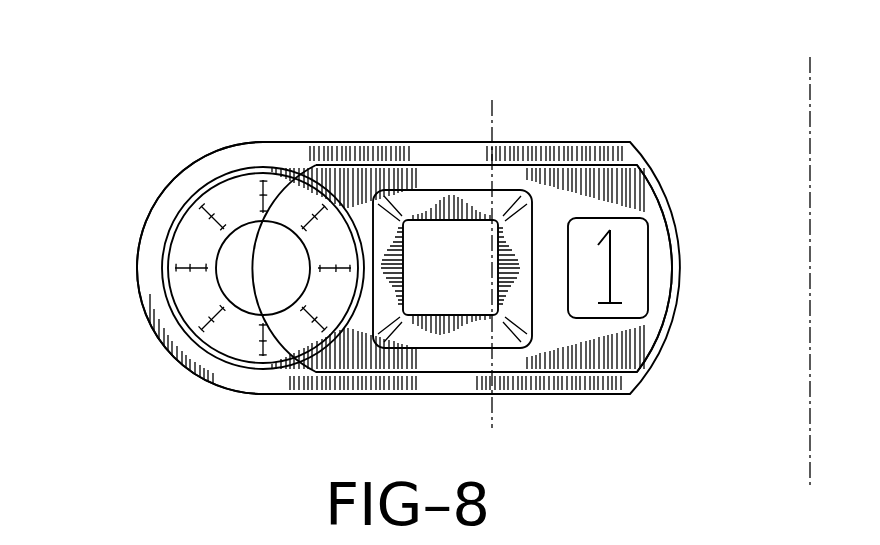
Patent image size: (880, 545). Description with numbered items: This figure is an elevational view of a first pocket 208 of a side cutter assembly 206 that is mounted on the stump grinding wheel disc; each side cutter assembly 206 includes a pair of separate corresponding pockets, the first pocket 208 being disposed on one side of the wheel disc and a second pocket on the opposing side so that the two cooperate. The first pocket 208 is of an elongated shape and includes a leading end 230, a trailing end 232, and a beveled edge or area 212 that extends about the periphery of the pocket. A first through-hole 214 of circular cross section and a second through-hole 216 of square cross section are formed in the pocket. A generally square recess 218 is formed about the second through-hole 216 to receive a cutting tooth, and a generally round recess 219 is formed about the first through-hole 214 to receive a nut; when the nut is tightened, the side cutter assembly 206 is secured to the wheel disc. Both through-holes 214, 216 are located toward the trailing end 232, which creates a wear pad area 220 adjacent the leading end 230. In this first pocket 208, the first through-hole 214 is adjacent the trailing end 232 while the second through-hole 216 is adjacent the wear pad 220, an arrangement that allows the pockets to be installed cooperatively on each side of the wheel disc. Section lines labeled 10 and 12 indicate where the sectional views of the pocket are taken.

The section line 10- 10 is at (755, 485).
The section line 12- 12 is at (548, 427).
The side cutter assembly 206 is at (329, 136).
The first pocket 208 is at (388, 142).
The beveled edge 212 is at (630, 383).
The first through-hole 214 is at (276, 223).
The second through-hole 216 is at (473, 313).
The square recess 218 is at (452, 203).
The round recess 219 is at (223, 337).
The wear pad area 220 is at (602, 330).
The leading end 230 is at (672, 208).
The trailing end 232 is at (139, 243).